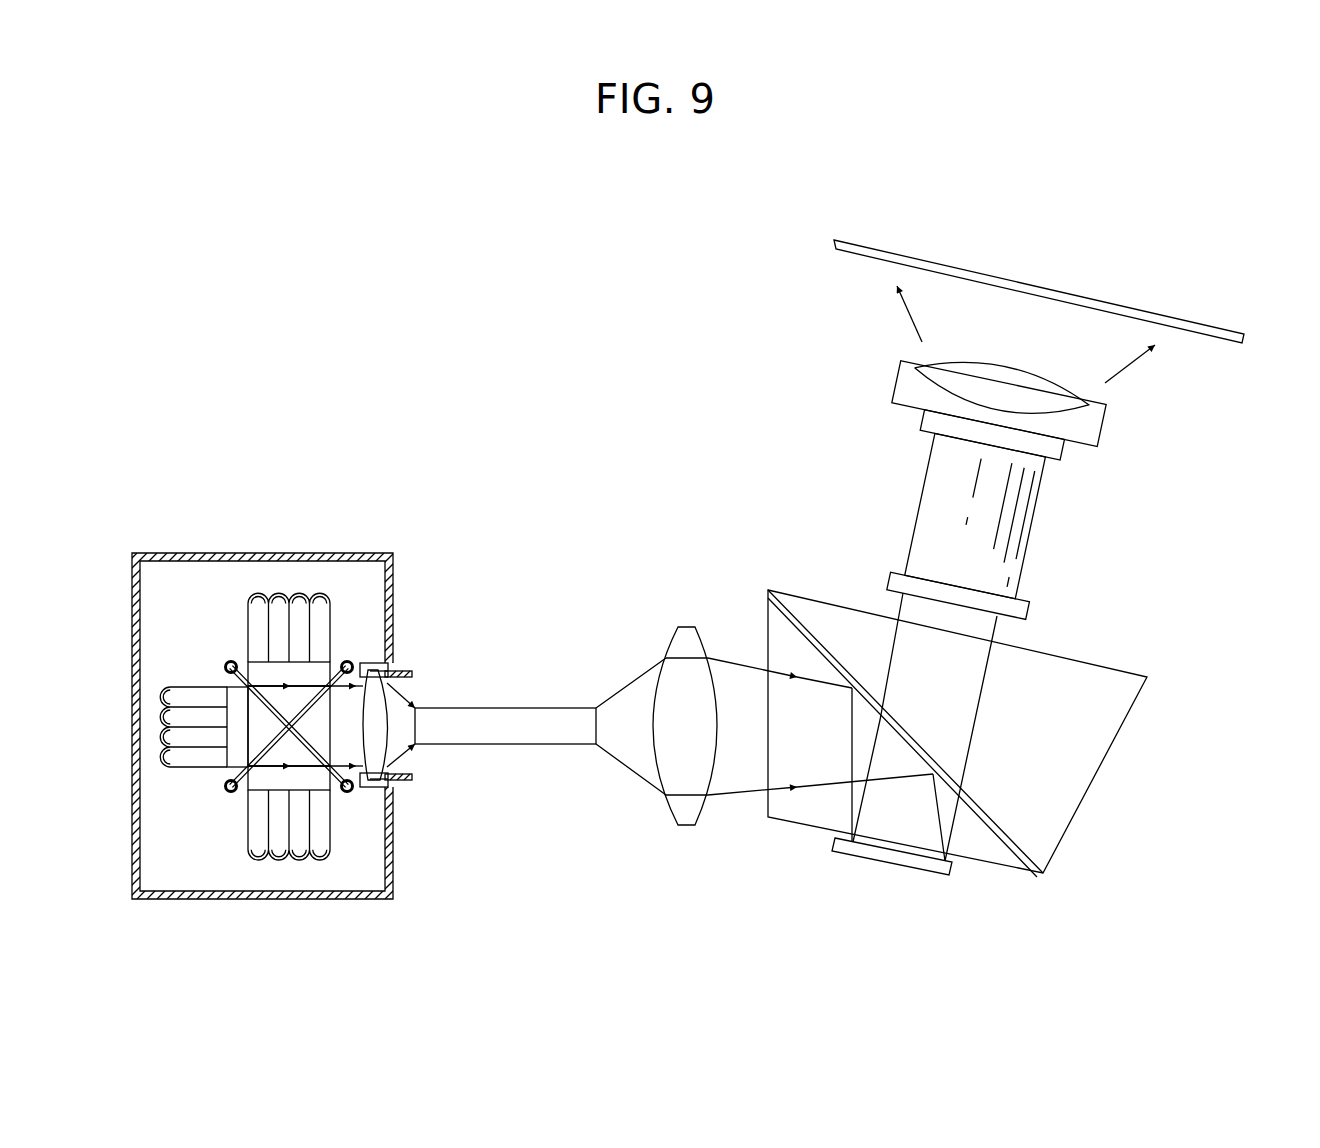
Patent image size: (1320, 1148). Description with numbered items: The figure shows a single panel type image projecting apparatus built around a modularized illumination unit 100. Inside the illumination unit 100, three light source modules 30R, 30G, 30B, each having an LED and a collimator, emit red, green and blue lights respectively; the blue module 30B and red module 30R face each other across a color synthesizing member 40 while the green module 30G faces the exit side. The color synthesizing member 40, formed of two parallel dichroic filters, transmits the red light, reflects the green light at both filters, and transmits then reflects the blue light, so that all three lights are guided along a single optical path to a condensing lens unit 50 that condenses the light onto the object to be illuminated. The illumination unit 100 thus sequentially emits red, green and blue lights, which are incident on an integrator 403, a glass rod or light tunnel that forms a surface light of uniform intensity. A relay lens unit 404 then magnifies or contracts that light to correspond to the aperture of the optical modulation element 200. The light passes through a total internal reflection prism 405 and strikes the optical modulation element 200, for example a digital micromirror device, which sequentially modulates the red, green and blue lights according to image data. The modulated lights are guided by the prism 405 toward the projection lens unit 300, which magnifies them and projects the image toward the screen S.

The illumination unit 100 is at (420, 594).
The light source module 30B is at (242, 640).
The light source module 30G is at (197, 776).
The light source module 30R is at (335, 818).
The color synthesizing member 40 is at (334, 666).
The condensing lens unit 50 is at (395, 690).
The integrator 403 is at (505, 707).
The relay lens unit 404 is at (687, 626).
The total internal reflection prism 405 is at (1098, 777).
The optical modulation element 200 is at (897, 863).
The projection lens unit 300 is at (1090, 470).
The screen S is at (1050, 288).